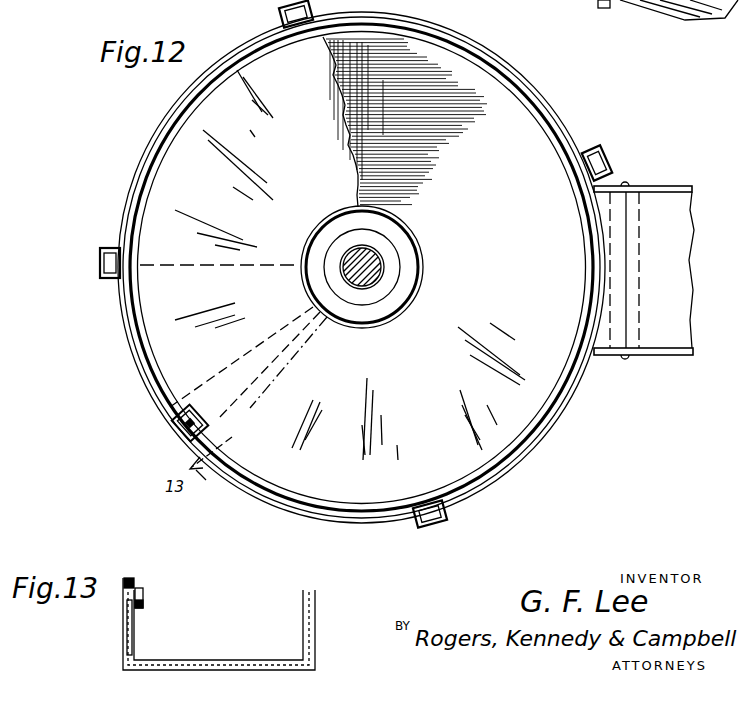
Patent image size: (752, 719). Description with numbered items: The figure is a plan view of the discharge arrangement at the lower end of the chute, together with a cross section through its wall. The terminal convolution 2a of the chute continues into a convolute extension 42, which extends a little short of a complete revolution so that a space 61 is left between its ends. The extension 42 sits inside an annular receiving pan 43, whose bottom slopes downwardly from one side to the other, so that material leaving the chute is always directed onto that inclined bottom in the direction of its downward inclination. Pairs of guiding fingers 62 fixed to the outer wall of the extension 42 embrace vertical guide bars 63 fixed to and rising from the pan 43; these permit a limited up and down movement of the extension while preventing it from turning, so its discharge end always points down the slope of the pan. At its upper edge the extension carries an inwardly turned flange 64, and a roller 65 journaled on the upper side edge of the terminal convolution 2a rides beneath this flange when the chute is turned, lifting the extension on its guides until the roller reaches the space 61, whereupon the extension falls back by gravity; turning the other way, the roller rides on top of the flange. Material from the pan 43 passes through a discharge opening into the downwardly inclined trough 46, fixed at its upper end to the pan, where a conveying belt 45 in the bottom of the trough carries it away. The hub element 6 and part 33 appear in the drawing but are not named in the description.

In FIG. 12, the terminal convolution 2a is at (138, 300).
In FIG. 13, the terminal convolution 2a is at (145, 637).
In FIG. 12, the hub 6 is at (368, 270).
In FIG. 12, the hub bore 33 is at (356, 278).
In FIG. 13, the convolute extension 42 is at (125, 632).
In FIG. 12, the annular receiving pan 43 is at (532, 452).
In FIG. 12, the conveying belt 45 is at (652, 270).
In FIG. 12, the trough 46 is at (670, 186).
In FIG. 12, the space 61 is at (180, 433).
In FIG. 12, the guiding fingers 62 is at (283, 17).
In FIG. 12, the vertical guide bars 63 is at (100, 265).
In FIG. 13, the inwardly turned flange 64 is at (133, 577).
In FIG. 12, the roller 65 is at (200, 424).
In FIG. 13, the roller 65 is at (140, 589).